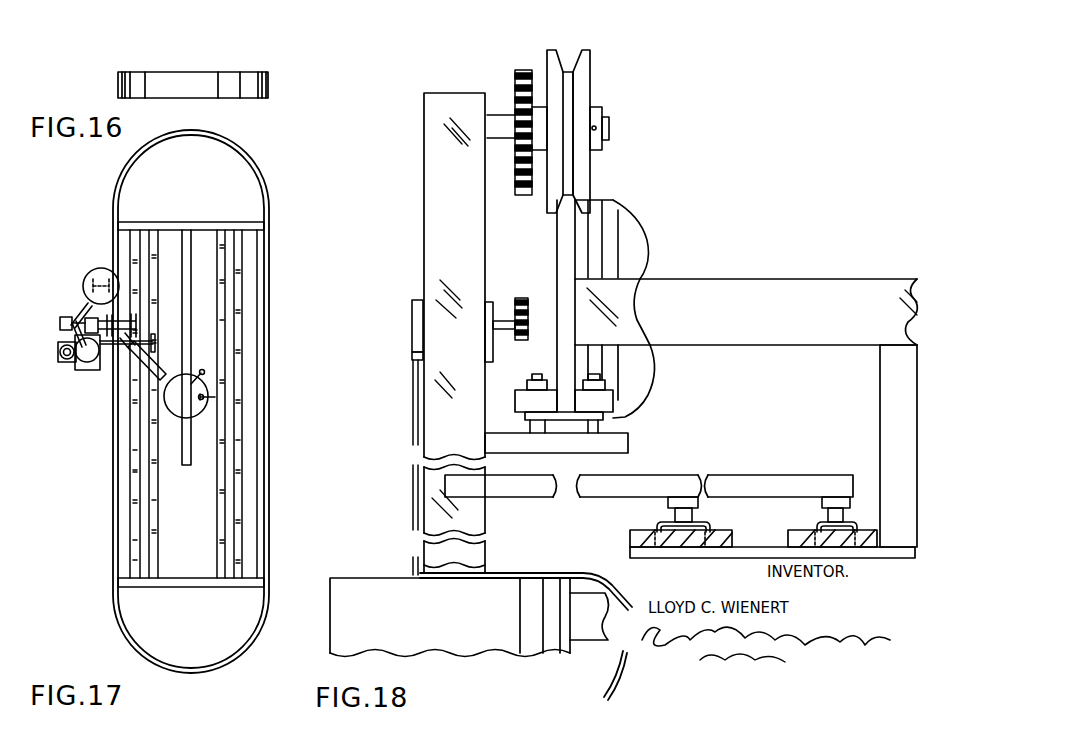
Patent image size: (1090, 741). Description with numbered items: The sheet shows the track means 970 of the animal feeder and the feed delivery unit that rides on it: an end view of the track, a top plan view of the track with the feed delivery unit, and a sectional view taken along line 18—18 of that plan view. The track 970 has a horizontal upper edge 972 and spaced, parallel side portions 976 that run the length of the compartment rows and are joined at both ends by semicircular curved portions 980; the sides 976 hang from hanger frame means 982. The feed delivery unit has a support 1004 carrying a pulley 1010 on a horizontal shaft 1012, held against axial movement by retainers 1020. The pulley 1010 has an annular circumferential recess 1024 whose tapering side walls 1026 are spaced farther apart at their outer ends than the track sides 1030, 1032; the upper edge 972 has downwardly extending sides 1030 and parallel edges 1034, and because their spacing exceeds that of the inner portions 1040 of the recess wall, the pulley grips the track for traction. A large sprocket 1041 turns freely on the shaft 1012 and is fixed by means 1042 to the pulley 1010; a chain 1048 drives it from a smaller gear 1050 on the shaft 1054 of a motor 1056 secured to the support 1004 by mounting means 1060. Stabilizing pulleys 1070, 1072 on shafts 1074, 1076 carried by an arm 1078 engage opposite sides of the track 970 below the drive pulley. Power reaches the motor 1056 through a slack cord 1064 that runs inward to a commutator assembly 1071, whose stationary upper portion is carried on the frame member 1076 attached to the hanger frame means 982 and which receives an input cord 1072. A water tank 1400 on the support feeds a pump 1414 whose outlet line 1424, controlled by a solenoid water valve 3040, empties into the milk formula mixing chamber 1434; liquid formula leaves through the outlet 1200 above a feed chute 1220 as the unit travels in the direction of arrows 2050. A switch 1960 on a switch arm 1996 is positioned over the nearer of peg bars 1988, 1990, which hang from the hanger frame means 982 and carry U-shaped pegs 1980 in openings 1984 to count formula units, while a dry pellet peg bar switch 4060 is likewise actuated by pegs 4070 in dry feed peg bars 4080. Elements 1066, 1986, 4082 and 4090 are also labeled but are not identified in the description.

In FIG. 17, the section line 18 is at (48, 340).
In FIG. 17, the track means 970 is at (248, 189).
In FIG. 18, the track means 970 is at (552, 272).
In FIG. 18, the horizontal upper edge 972 is at (573, 201).
In FIG. 17, the side portions 976 is at (117, 547).
In FIG. 18, the side portions 976 is at (562, 233).
In FIG. 16, the curved portions 980 is at (178, 70).
In FIG. 17, the curved portions 980 is at (187, 135).
In FIG. 17, the hanger frame means 982 is at (156, 221).
In FIG. 18, the support 1004 is at (430, 448).
In FIG. 17, the pulley 1010 is at (124, 312).
In FIG. 18, the pulley 1010 is at (592, 81).
In FIG. 18, the horizontal shaft 1012 is at (610, 127).
In FIG. 18, the retainers 1020 is at (592, 113).
In FIG. 18, the annular circumferential recess 1024 is at (568, 58).
In FIG. 18, the side walls 1026 is at (548, 60).
In FIG. 18, the side of track means 1030 is at (557, 291).
In FIG. 18, the side of track means 1032 is at (560, 201).
In FIG. 18, the opposite edges 1034 is at (583, 204).
In FIG. 17, the inner portions of recess wall 1040 is at (110, 247).
In FIG. 18, the inner portions of recess wall 1040 is at (573, 198).
In FIG. 18, the large sprocket 1041 is at (514, 80).
In FIG. 18, the fixing means 1042 is at (517, 155).
In FIG. 18, the chain 1048 is at (515, 196).
In FIG. 18, the smaller gear 1050 is at (522, 341).
In FIG. 18, the motor shaft 1054 is at (505, 332).
In FIG. 18, the motor 1056 is at (411, 330).
In FIG. 18, the mounting means 1060 is at (412, 362).
In FIG. 17, the cord 1064 is at (157, 378).
In FIG. 18, the cord 1064 is at (415, 413).
In FIG. 17, the pivot link 1066 is at (163, 394).
In FIG. 18, the stabilizing pulley 1070 is at (513, 399).
In FIG. 17, the commutator assembly 1071 is at (187, 421).
In FIG. 17, the stabilizing pulley 1072 is at (197, 372).
In FIG. 18, the stabilizing pulley 1072 is at (609, 396).
In FIG. 18, the shaft 1074 is at (543, 440).
In FIG. 17, the shaft 1076 is at (186, 496).
In FIG. 18, the shaft 1076 is at (600, 428).
In FIG. 18, the arm 1078 is at (630, 447).
In FIG. 17, the liquid formula outlet 1200 is at (72, 318).
In FIG. 17, the feed chute 1220 is at (76, 364).
In FIG. 17, the water tank 1400 is at (89, 272).
In FIG. 17, the pump 1414 is at (106, 270).
In FIG. 17, the outlet line 1424 is at (86, 296).
In FIG. 17, the milk formula mixing chamber 1434 is at (68, 350).
In FIG. 17, the switch 1960 is at (136, 325).
In FIG. 18, the switch 1960 is at (667, 503).
In FIG. 17, the U-shaped pegs 1980 is at (250, 250).
In FIG. 18, the U-shaped pegs 1980 is at (706, 527).
In FIG. 17, the openings 1984 is at (240, 282).
In FIG. 18, the openings 1984 is at (643, 526).
In FIG. 17, the rail 1986 is at (240, 288).
In FIG. 17, the liquid feed peg bar 1988 is at (130, 496).
In FIG. 18, the liquid feed peg bar 1988 is at (630, 539).
In FIG. 17, the liquid formula control peg bar 1990 is at (240, 455).
In FIG. 18, the switch arm 1996 is at (567, 496).
In FIG. 17, the arrows 2050 is at (108, 253).
In FIG. 17, the solenoid water valve 3040 is at (66, 334).
In FIG. 18, the dry pellet peg bar switch 4060 is at (837, 497).
In FIG. 18, the pegs 4070 is at (858, 522).
In FIG. 17, the dry feed peg bars 4080 is at (153, 512).
In FIG. 18, the dry feed peg bars 4080 is at (805, 534).
In FIG. 17, the rail 4082 is at (220, 503).
In FIG. 17, the cross beam 4090 is at (128, 352).
In FIG. 18, the cross beam 4090 is at (577, 473).